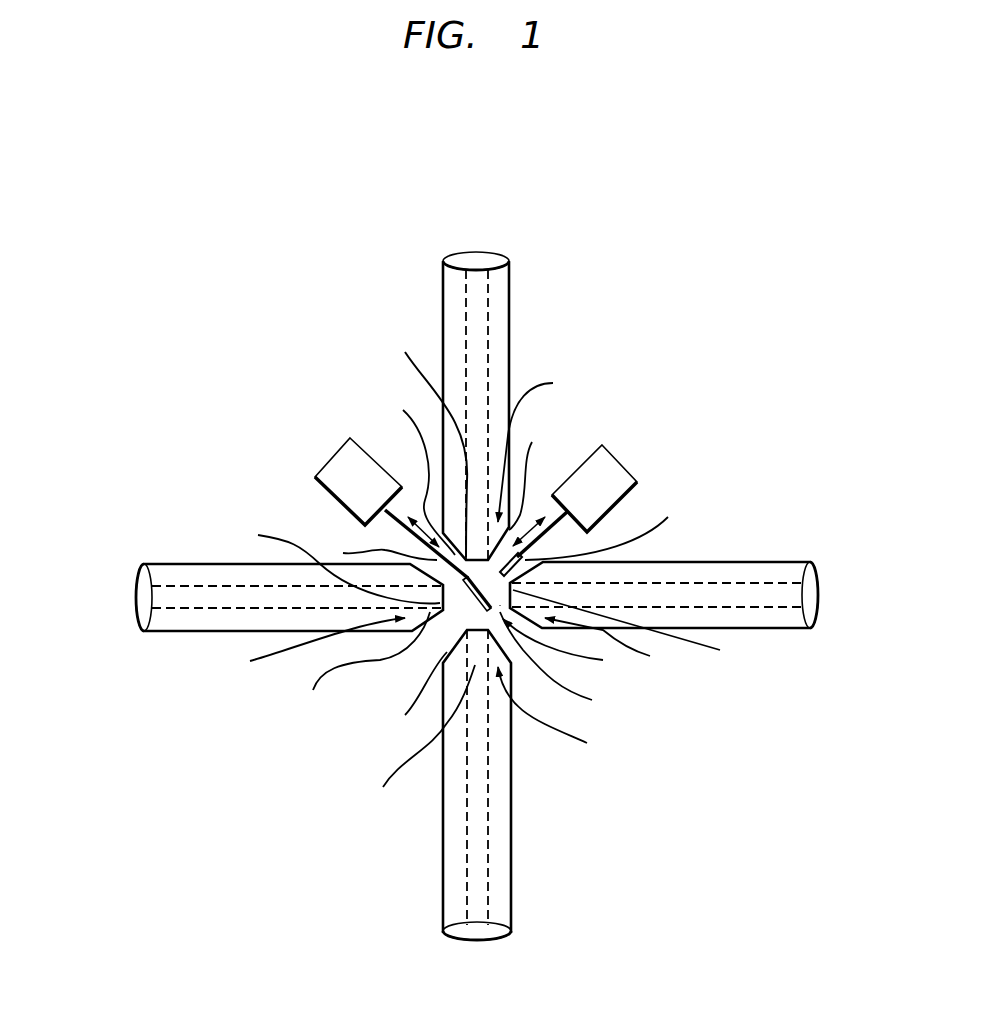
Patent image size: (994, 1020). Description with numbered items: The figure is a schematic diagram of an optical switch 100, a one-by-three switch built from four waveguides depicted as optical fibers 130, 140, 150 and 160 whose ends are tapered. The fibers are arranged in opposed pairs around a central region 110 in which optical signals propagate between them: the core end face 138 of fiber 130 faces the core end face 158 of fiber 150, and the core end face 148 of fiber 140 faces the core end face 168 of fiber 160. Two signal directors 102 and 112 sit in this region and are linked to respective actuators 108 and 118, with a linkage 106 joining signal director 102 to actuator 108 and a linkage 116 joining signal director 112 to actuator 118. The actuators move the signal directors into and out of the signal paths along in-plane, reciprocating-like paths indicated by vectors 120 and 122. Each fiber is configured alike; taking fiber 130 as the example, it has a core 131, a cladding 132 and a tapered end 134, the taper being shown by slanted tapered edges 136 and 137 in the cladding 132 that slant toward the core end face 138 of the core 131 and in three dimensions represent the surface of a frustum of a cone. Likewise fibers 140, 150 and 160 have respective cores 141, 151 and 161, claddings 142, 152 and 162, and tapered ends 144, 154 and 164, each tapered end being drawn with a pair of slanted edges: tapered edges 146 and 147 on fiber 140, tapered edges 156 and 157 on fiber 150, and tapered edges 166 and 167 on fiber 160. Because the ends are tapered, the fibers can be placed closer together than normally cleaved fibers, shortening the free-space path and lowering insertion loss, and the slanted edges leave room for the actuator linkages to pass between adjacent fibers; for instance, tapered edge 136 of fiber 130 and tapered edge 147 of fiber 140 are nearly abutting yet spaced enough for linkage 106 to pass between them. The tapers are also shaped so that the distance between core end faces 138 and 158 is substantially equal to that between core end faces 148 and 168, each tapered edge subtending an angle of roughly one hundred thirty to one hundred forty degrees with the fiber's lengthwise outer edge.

The optical switch 100 is at (499, 119).
The signal director 102 is at (470, 604).
The linkage 106 is at (405, 528).
The actuator 108 is at (330, 455).
The region 110 is at (500, 605).
The signal director 112 is at (525, 563).
The linkage 116 is at (550, 535).
The actuator 118 is at (624, 466).
The vector 120 is at (408, 515).
The vector 122 is at (545, 515).
The optical fiber 130 is at (163, 563).
The core 131 is at (203, 585).
The cladding 132 is at (137, 616).
The tapered end 134 is at (309, 648).
The tapered edge 136 is at (372, 543).
The tapered edge 137 is at (361, 665).
The core end face 138 is at (331, 561).
The optical fiber 140 is at (511, 290).
The core 141 is at (490, 344).
The cladding 142 is at (453, 258).
The tapered end 144 is at (544, 447).
The light beam 146 is at (538, 473).
The tapered edge 147 is at (413, 473).
The core end face 148 is at (427, 441).
The optical fiber 150 is at (722, 562).
The core 151 is at (800, 583).
The cladding 152 is at (818, 600).
The tapered end 154 is at (615, 646).
The light beam 156 is at (570, 647).
The tapered edge 157 is at (612, 520).
The core end face 158 is at (633, 626).
The optical fiber 160 is at (512, 783).
The core 161 is at (490, 853).
The cladding 162 is at (467, 940).
The tapered end 164 is at (560, 716).
The light beam 166 is at (564, 662).
The light beam 167 is at (407, 693).
The core end face 168 is at (421, 740).